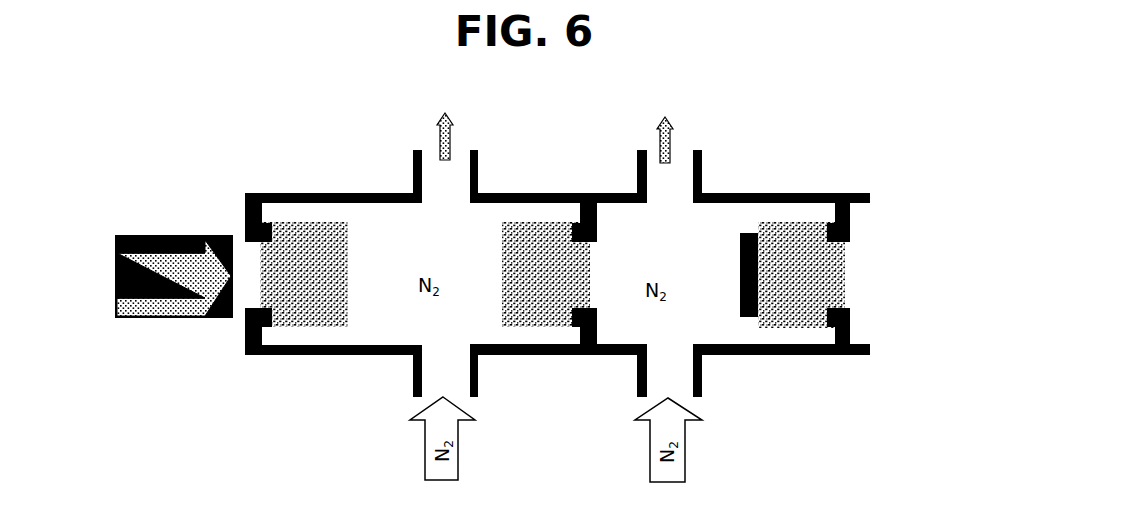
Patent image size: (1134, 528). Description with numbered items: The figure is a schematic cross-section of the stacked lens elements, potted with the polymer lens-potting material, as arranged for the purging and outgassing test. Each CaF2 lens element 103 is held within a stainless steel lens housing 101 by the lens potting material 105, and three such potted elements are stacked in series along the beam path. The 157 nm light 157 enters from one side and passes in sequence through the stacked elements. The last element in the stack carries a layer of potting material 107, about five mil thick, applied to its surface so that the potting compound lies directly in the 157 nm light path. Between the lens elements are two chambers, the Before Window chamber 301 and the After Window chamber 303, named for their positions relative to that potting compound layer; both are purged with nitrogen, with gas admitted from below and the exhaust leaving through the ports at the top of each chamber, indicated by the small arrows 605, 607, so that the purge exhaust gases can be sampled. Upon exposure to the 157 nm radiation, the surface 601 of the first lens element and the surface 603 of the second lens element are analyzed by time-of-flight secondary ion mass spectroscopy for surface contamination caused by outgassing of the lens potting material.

The stainless steel lens housing 101 is at (247, 194).
The CaF2 lens element 103 is at (292, 228).
The lens potting material 105 is at (272, 327).
The layer of potting material 107 is at (750, 317).
The 157 nm light 157 is at (174, 276).
The Before Window chamber 301 is at (320, 280).
The After Window chamber 303 is at (623, 332).
The surface of the first lens element 601 is at (355, 276).
The surface of the second lens element 603 is at (594, 271).
The first gas outlet 605 is at (453, 124).
The second gas outlet 607 is at (673, 138).